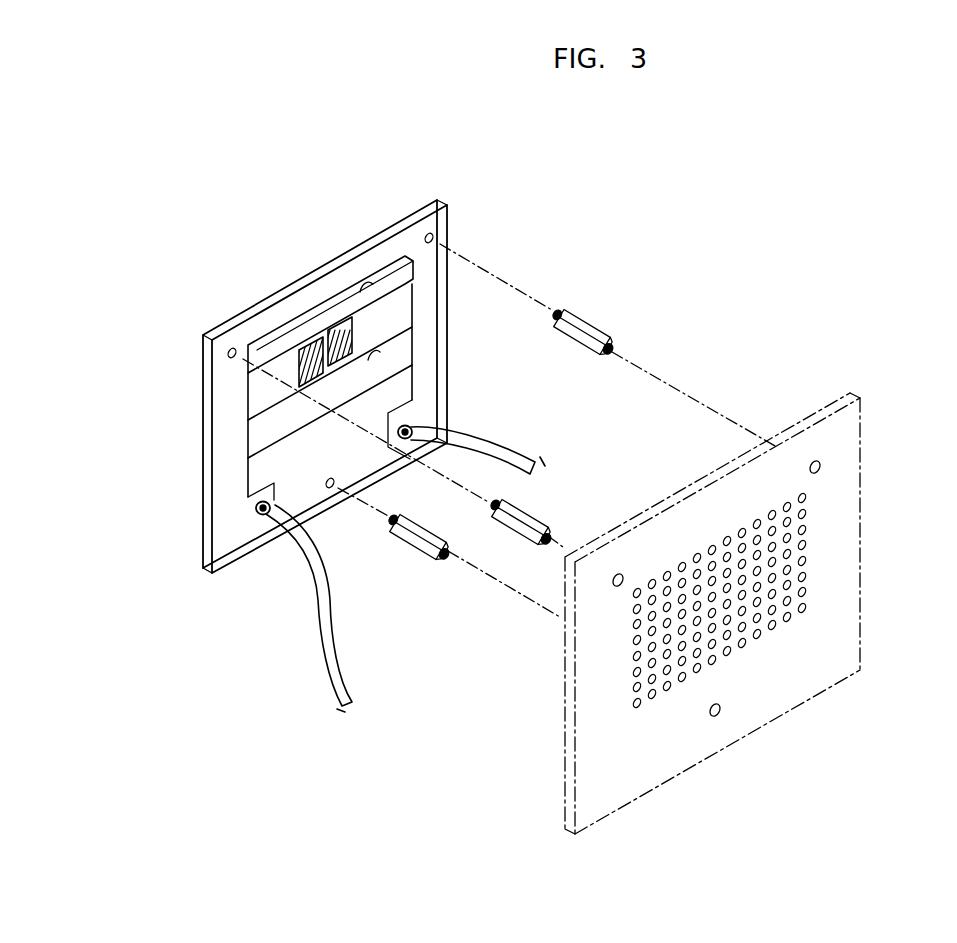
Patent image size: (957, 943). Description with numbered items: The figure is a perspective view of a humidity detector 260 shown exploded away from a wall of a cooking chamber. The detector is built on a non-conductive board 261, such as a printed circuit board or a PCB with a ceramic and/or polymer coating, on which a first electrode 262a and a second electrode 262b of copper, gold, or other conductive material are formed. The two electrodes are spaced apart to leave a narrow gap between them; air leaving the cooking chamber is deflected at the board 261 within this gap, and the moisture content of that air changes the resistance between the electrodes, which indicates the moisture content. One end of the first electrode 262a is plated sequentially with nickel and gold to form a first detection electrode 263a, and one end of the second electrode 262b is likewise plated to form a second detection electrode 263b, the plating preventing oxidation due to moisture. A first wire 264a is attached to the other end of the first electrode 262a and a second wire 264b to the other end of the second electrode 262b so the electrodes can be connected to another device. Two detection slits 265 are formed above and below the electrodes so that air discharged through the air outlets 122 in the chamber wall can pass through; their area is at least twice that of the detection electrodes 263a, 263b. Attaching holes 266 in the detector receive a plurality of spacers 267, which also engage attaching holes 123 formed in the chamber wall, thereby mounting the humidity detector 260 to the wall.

The humidity detector 260 is at (197, 307).
The non-conductive board 261 is at (232, 373).
The first electrode 262a is at (232, 470).
The second electrode 262b is at (420, 372).
The first detection electrode 263a is at (312, 348).
The second detection electrode 263b is at (350, 330).
The first wire 264a is at (318, 660).
The second wire 264b is at (523, 448).
The detection slits 265 is at (378, 360).
The attaching holes 266 is at (434, 236).
The spacers 267 is at (586, 318).
The air outlets 122 is at (812, 584).
The attaching holes 123 is at (822, 466).